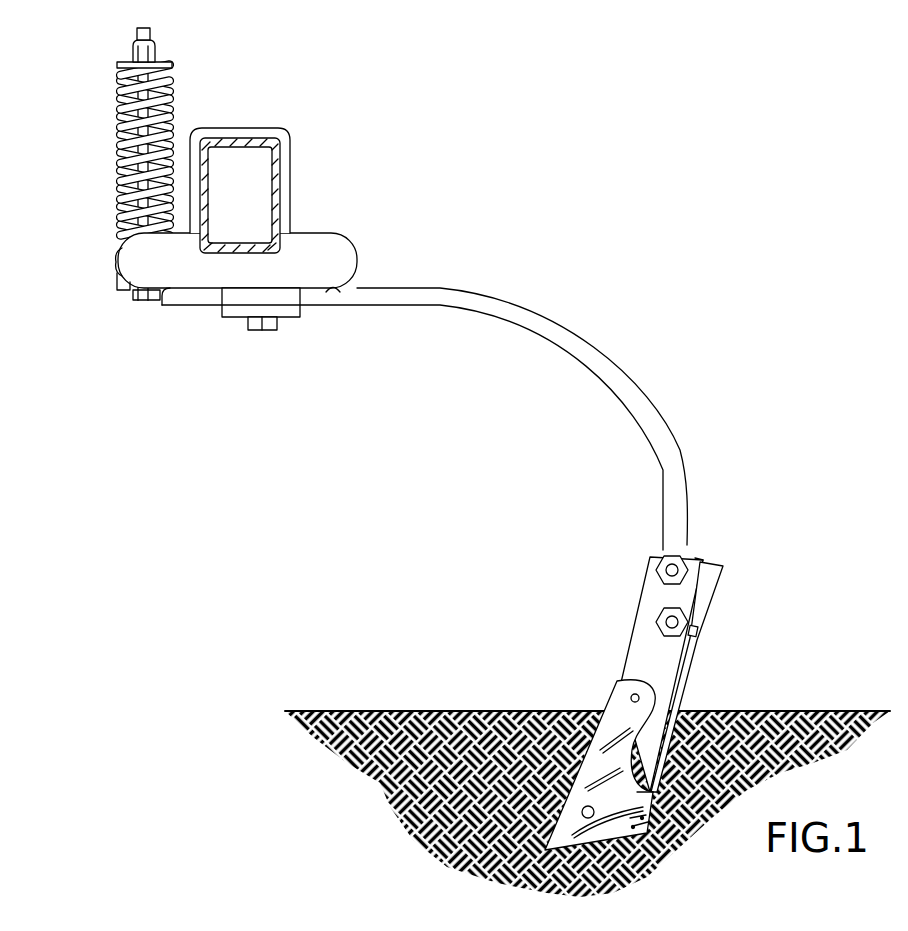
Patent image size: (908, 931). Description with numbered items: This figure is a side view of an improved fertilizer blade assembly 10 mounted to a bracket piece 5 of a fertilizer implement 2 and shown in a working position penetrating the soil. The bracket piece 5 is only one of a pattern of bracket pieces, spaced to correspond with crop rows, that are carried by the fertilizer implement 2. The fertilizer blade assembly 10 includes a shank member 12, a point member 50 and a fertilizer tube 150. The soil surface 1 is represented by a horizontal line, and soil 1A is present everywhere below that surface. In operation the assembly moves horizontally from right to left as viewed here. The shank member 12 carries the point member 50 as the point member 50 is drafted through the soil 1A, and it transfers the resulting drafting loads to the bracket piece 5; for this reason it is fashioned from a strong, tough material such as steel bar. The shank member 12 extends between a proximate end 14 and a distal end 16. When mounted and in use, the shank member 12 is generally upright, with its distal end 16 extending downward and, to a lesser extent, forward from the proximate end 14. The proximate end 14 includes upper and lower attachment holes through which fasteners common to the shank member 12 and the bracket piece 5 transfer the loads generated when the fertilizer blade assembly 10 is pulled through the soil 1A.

The soil surface 1 is at (768, 708).
The soil 1A is at (415, 742).
The fertilizer implement 2 is at (350, 194).
The bracket piece 5 is at (603, 358).
The fertilizer blade assembly 10 is at (622, 625).
The shank member 12 is at (640, 661).
The proximate end 14 is at (695, 558).
The fertilizer tube 150 is at (748, 578).
The point member 50 is at (558, 780).
The distal end 16 is at (600, 832).